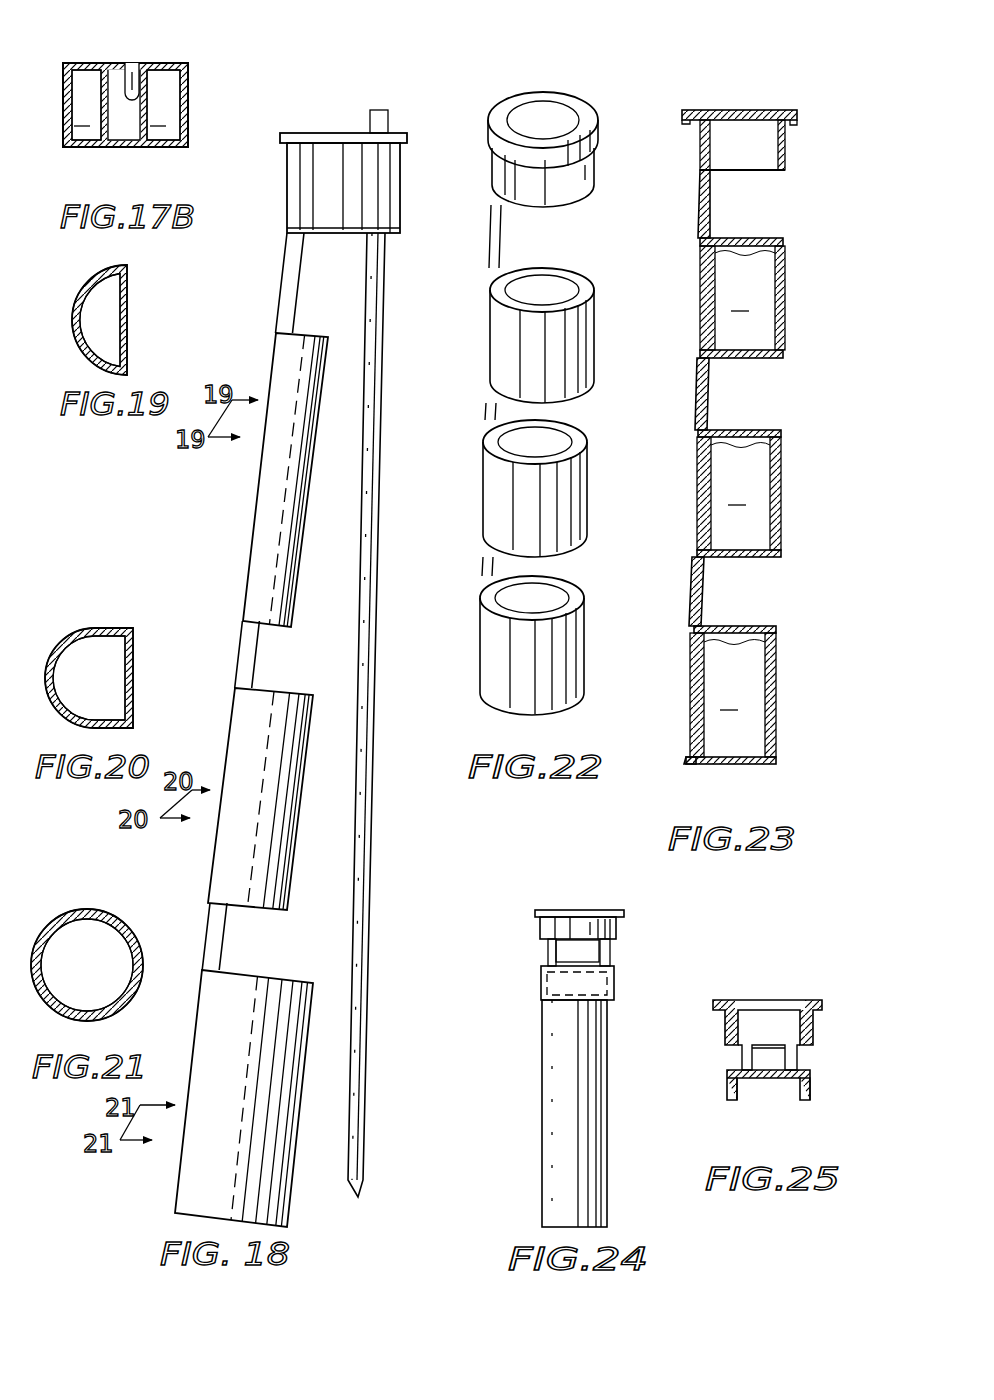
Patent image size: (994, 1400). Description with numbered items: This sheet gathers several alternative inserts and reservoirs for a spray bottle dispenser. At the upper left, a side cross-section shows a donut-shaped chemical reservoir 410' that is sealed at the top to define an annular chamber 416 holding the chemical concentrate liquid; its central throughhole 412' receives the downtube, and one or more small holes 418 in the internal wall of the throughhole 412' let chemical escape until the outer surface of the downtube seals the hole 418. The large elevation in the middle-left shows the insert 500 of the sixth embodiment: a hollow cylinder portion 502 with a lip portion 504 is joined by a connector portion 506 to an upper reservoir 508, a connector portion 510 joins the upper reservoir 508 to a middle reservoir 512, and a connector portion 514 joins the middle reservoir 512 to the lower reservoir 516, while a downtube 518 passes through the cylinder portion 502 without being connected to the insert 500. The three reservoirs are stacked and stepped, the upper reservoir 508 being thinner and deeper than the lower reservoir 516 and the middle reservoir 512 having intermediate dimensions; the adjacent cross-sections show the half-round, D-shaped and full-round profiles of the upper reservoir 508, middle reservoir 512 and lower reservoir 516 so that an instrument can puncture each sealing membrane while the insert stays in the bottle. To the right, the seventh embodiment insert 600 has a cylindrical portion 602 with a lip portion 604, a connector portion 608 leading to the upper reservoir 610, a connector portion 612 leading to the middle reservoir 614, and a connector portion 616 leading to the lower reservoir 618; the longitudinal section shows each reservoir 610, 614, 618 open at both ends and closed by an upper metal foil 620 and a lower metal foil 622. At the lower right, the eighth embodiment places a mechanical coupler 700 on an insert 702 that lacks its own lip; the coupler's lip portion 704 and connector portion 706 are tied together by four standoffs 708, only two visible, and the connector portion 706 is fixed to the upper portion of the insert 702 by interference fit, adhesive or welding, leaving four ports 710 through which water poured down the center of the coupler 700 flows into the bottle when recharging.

In FIG. 17B, the donut-shaped chemical reservoir 410' is at (169, 105).
In FIG. 17B, the throughhole 412' is at (100, 52).
In FIG. 17B, the annular chamber 416 is at (86, 142).
In FIG. 17B, the small hole 418 is at (133, 72).
In FIG. 18, the insert 500 is at (268, 262).
In FIG. 18, the cylinder portion 502 is at (392, 218).
In FIG. 18, the lip portion 504 is at (407, 138).
In FIG. 18, the connector portion 506 is at (293, 300).
In FIG. 19, the upper reservoir 508 is at (127, 345).
In FIG. 18, the upper reservoir 508 is at (296, 547).
In FIG. 18, the connector portion 510 is at (252, 665).
In FIG. 20, the middle reservoir 512 is at (133, 695).
In FIG. 18, the middle reservoir 512 is at (268, 825).
In FIG. 18, the connector portion 514 is at (217, 936).
In FIG. 21, the lower reservoir 516 is at (143, 978).
In FIG. 18, the lower reservoir 516 is at (272, 1130).
In FIG. 18, the downtube 518 is at (378, 992).
In FIG. 22, the insert 600 is at (480, 262).
In FIG. 23, the insert 600 is at (698, 105).
In FIG. 22, the cylindrical portion 602 is at (592, 165).
In FIG. 23, the cylindrical portion 602 is at (786, 140).
In FIG. 22, the lip portion 604 is at (575, 120).
In FIG. 23, the lip portion 604 is at (800, 118).
In FIG. 22, the connector portion 608 is at (497, 240).
In FIG. 23, the connector portion 608 is at (625, 467).
In FIG. 22, the upper reservoir 610 is at (562, 345).
In FIG. 23, the upper reservoir 610 is at (786, 316).
In FIG. 22, the connector portion 612 is at (485, 415).
In FIG. 23, the connector portion 612 is at (694, 402).
In FIG. 22, the middle reservoir 614 is at (572, 512).
In FIG. 23, the middle reservoir 614 is at (782, 500).
In FIG. 22, the connector portion 616 is at (485, 565).
In FIG. 23, the connector portion 616 is at (690, 612).
In FIG. 22, the lower reservoir 618 is at (560, 660).
In FIG. 23, the upper metal foil 620 is at (783, 240).
In FIG. 23, the lower metal foil 622 is at (783, 352).
In FIG. 24, the mechanical coupler 700 is at (516, 918).
In FIG. 25, the mechanical coupler 700 is at (758, 995).
In FIG. 24, the insert 702 is at (556, 1080).
In FIG. 24, the lip portion 704 is at (620, 910).
In FIG. 25, the lip portion 704 is at (822, 1000).
In FIG. 24, the connector portion 706 is at (614, 985).
In FIG. 25, the connector portion 706 is at (795, 1092).
In FIG. 24, the standoff 708 is at (608, 952).
In FIG. 25, the standoff 708 is at (742, 1058).
In FIG. 24, the port 710 is at (553, 952).